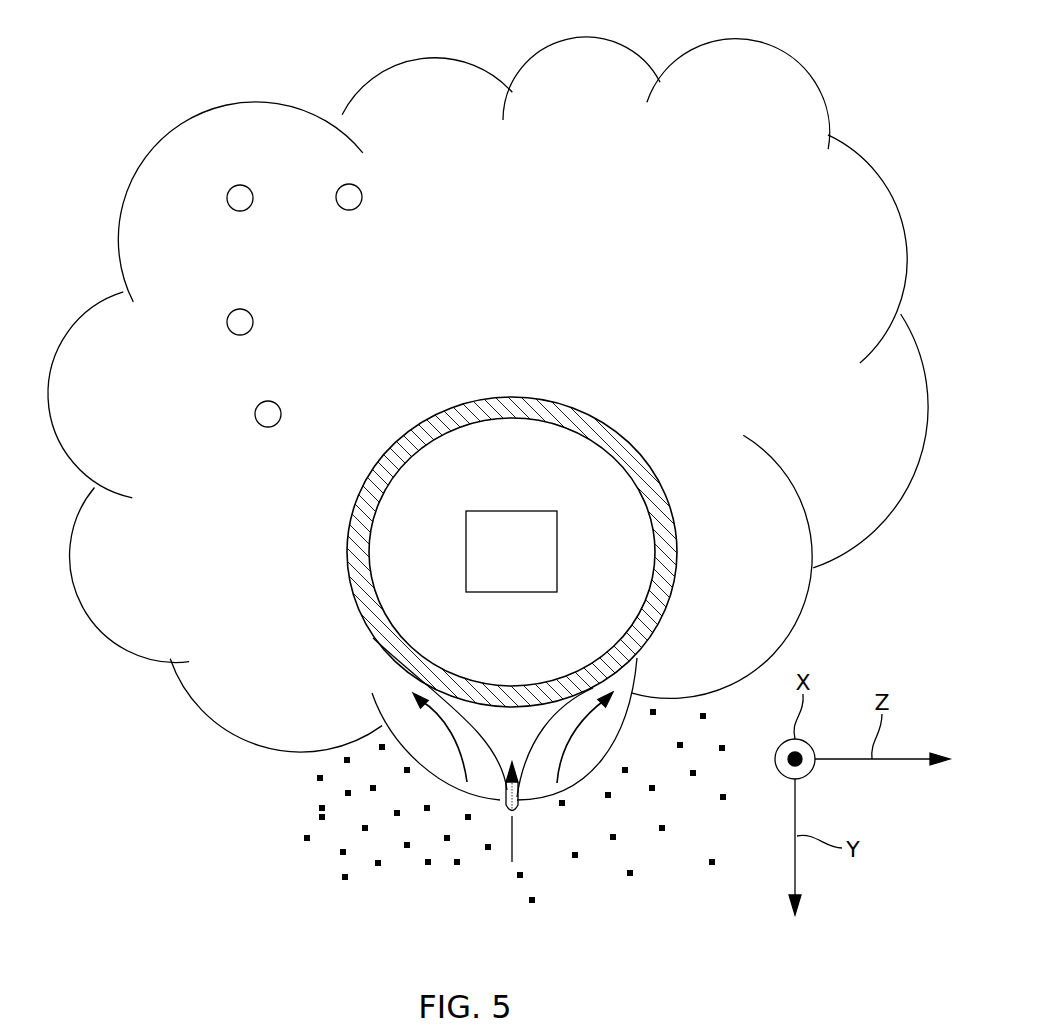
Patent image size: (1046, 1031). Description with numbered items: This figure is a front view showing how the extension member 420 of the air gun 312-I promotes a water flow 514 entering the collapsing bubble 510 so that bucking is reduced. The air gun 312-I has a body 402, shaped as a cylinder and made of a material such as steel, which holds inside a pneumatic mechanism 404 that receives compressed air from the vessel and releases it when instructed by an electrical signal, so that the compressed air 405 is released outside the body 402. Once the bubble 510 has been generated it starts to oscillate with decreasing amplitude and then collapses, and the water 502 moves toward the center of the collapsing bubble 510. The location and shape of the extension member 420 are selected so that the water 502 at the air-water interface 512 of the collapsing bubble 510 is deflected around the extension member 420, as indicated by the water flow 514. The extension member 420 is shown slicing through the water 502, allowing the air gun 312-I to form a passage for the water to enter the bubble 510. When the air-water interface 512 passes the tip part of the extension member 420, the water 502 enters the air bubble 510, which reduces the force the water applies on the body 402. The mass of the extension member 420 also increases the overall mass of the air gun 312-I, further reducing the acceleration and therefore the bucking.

The collapsing bubble 510 is at (488, 427).
The compressed air 405 is at (240, 185).
The body 402 is at (493, 397).
The pneumatic mechanism 404 is at (512, 511).
The air gun 312-I is at (519, 527).
The air-water interface 512 is at (233, 733).
The water 502 is at (380, 870).
The extension member 420 is at (511, 748).
The water flow 514 is at (514, 833).